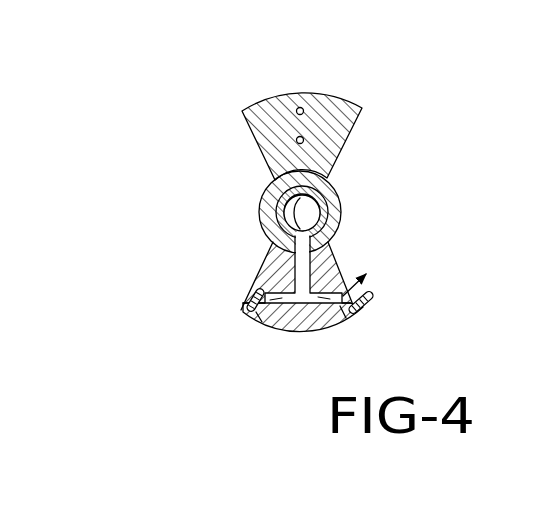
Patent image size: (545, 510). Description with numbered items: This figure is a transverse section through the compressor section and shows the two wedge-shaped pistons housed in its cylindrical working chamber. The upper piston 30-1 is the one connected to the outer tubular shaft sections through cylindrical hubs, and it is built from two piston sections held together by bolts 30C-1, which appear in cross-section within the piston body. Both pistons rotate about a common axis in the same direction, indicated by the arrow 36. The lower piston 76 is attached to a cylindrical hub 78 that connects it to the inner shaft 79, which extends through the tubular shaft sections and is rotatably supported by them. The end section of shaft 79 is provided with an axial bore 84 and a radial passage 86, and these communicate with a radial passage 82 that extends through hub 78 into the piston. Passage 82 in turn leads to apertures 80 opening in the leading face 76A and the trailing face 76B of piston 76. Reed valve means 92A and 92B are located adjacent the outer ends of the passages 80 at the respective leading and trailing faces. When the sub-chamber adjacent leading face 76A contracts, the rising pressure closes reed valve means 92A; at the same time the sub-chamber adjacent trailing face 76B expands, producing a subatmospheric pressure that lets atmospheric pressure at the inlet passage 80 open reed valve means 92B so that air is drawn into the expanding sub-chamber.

The wedge-shaped piston 30-1 is at (268, 92).
The bolts 30C-1 is at (302, 138).
The arrow 36 is at (455, 234).
The cylindrical hub 78 is at (259, 218).
The inner shaft 79 is at (266, 178).
The axial bore 84 is at (284, 197).
The radial passage 86 is at (330, 192).
The radial passage 82 is at (268, 256).
The wedge-shaped piston 76 is at (350, 318).
The leading face 76A is at (266, 270).
The trailing face 76B is at (335, 258).
The apertures 80 is at (258, 318).
The reed valve means 92A is at (247, 300).
The reed valve means 92B is at (367, 297).